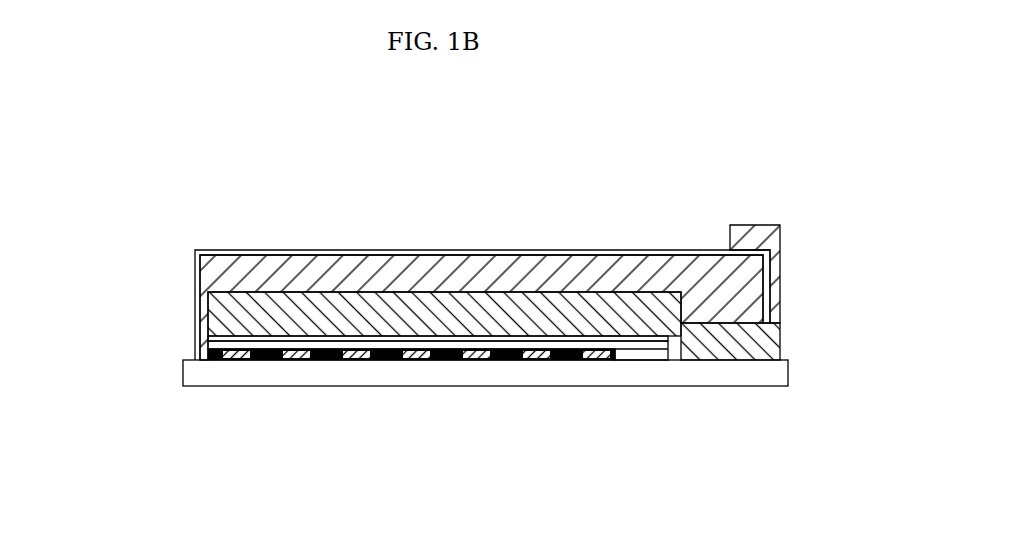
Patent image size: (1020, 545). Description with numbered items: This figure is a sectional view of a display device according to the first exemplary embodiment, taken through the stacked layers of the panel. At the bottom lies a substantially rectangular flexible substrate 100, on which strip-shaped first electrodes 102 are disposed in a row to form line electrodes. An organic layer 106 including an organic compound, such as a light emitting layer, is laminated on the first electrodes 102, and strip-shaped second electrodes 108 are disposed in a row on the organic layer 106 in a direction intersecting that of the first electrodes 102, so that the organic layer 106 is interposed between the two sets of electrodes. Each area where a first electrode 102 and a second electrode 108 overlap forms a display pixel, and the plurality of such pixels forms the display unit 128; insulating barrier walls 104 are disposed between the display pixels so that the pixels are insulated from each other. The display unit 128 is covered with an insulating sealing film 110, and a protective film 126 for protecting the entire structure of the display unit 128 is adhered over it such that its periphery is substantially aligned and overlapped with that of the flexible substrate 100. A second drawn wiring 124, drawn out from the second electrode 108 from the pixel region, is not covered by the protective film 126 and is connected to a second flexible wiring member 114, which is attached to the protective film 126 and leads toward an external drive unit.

The flexible substrate 100 is at (203, 377).
The first electrodes 102 is at (250, 356).
The insulating barrier walls 104 is at (258, 346).
The organic layer 106 is at (240, 341).
The second electrodes 108 is at (226, 302).
The insulating sealing film 110 is at (260, 276).
The second flexible wiring member 114 is at (778, 298).
The second drawn wiring 124 is at (760, 338).
The protective film 126 is at (775, 272).
The display unit 128 is at (347, 322).